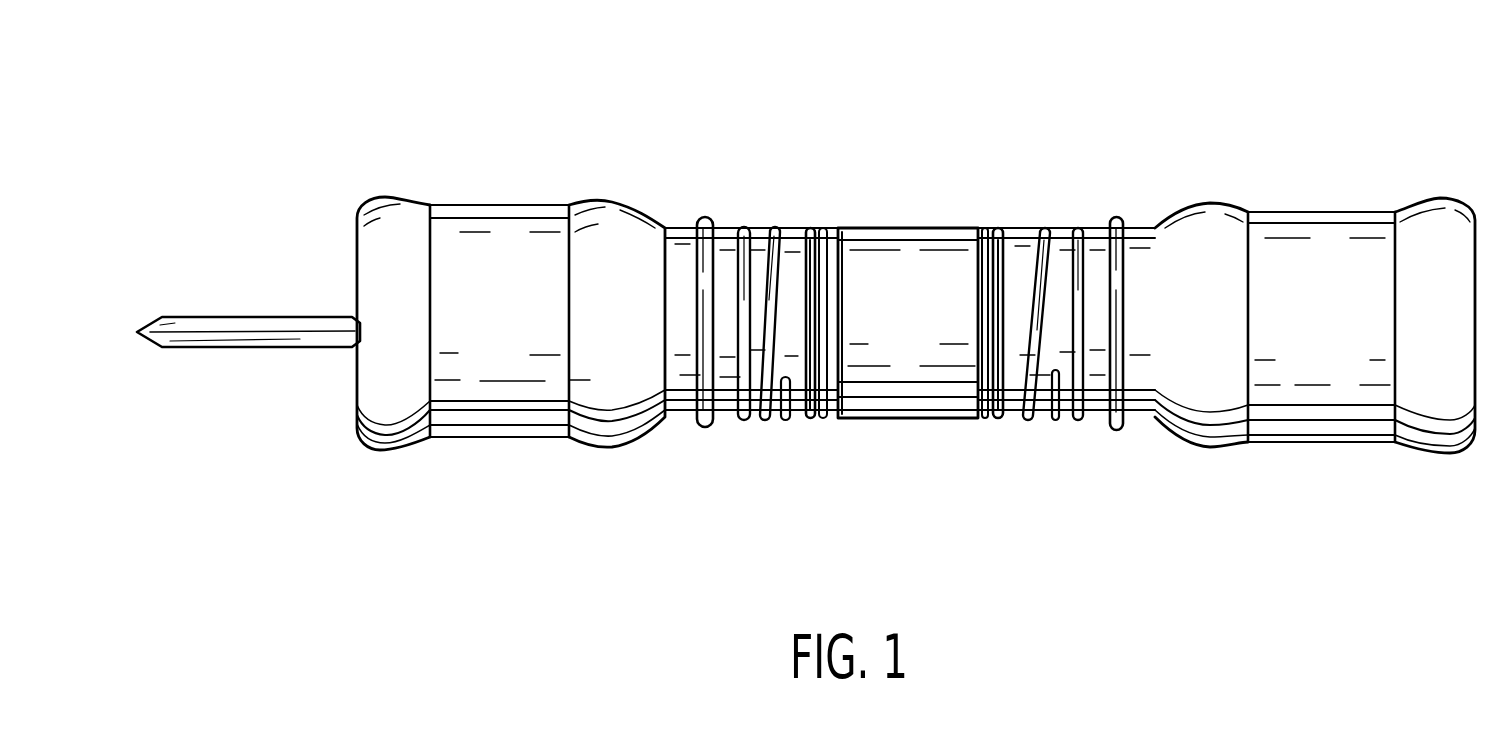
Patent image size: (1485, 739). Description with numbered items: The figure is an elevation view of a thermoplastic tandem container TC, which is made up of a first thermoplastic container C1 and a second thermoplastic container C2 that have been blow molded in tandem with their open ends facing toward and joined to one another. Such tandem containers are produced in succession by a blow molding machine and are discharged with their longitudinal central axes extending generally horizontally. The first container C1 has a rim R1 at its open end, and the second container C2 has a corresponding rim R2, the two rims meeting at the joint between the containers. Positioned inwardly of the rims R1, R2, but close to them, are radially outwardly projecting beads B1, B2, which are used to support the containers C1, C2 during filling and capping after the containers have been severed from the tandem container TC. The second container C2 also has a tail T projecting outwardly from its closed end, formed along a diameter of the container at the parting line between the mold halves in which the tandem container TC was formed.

The tail T is at (228, 318).
The second thermoplastic container C2 is at (500, 205).
The second bead B2 is at (700, 216).
The second rim R2 is at (808, 228).
The tandem container TC is at (894, 130).
The first rim R1 is at (1008, 228).
The first bead B1 is at (1116, 217).
The first thermoplastic container C1 is at (1313, 212).